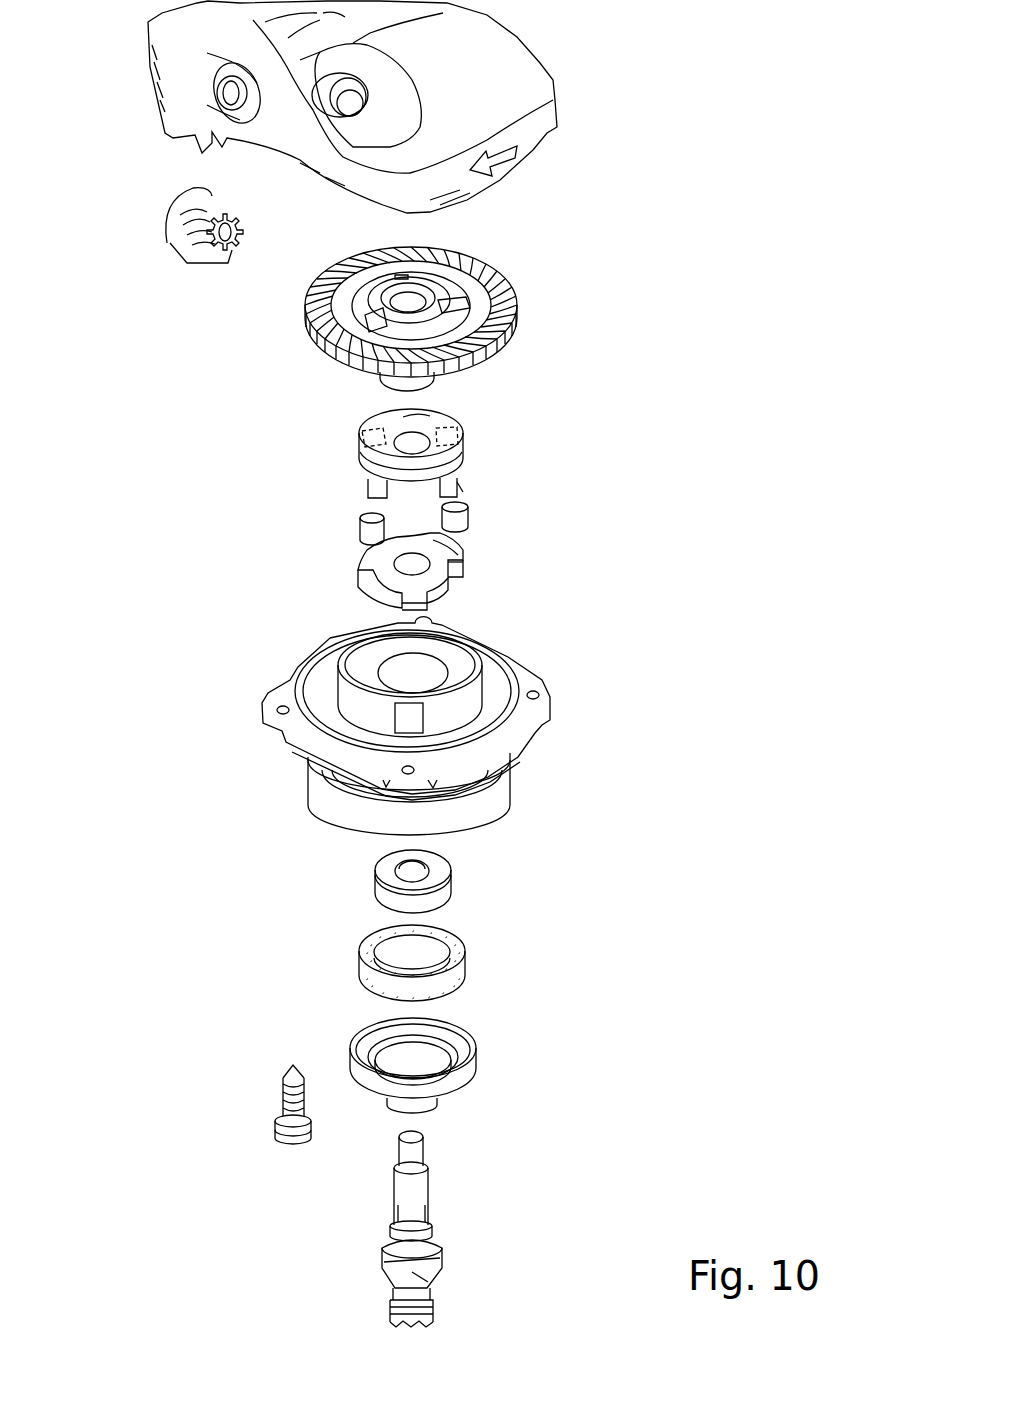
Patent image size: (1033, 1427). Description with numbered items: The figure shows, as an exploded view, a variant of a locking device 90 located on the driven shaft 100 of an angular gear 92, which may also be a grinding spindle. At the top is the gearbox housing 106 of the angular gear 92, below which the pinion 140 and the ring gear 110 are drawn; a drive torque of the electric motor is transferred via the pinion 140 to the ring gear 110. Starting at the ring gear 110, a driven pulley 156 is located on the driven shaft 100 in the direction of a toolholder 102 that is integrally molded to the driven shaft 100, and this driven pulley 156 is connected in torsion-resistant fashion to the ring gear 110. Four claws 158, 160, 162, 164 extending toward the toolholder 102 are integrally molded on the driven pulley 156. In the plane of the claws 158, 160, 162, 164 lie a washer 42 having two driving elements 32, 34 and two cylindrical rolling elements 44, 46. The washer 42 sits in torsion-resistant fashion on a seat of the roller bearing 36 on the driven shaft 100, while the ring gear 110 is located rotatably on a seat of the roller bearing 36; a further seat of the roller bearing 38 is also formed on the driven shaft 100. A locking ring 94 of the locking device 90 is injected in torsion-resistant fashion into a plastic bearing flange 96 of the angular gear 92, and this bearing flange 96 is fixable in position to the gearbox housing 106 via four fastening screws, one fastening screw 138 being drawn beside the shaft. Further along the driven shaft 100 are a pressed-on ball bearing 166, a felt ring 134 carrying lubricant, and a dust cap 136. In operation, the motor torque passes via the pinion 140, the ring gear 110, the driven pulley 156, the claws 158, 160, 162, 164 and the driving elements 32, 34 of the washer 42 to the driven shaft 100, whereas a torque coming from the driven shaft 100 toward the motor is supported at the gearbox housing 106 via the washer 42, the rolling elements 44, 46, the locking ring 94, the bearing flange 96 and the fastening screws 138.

The gearbox housing 106 is at (487, 77).
The pinion 140 is at (168, 242).
The angular gear 92 is at (510, 295).
The ring gear 110 is at (513, 347).
The driven pulley 156 is at (412, 431).
The claw 164 is at (362, 436).
The claw 162 is at (460, 437).
The claw 160 is at (460, 492).
The claw 158 is at (368, 488).
The locking device 90 is at (530, 502).
The rolling element 46 is at (468, 520).
The rolling element 44 is at (358, 533).
The washer 42 is at (465, 553).
The driving element 34 is at (463, 570).
The driving element 32 is at (411, 600).
The locking ring 94 is at (457, 704).
The bearing flange 96 is at (477, 803).
The ball bearing 166 is at (435, 897).
The felt ring 134 is at (455, 963).
The dust cap 136 is at (469, 1065).
The fastening screw 138 is at (278, 1130).
The driven shaft 100 is at (415, 1229).
The seat of the roller bearing 38 is at (392, 1178).
The seat of the roller bearing 36 is at (392, 1207).
The toolholder 102 is at (355, 1302).